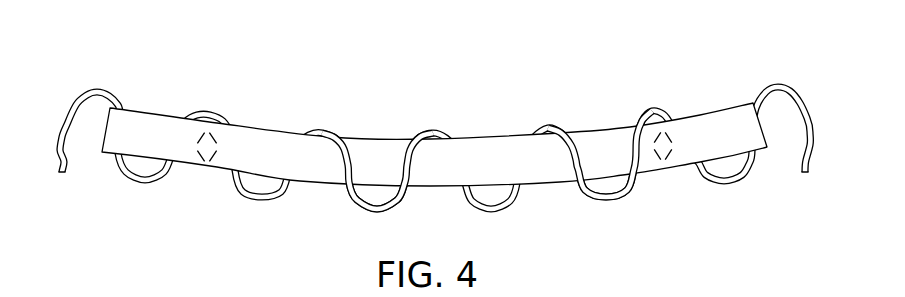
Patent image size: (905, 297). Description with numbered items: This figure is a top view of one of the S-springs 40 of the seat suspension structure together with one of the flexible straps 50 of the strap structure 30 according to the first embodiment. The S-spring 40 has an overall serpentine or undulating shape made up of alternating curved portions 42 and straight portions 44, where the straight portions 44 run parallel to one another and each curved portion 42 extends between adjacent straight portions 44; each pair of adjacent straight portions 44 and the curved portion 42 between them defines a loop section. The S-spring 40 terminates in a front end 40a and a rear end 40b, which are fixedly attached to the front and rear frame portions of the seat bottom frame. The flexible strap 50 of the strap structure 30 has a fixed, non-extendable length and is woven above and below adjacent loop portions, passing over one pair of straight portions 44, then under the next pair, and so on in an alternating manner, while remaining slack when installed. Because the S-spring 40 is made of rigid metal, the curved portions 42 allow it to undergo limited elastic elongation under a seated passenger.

The strap structure 30 is at (551, 192).
The S-spring 40 is at (431, 142).
The front end 40a is at (53, 163).
The rear end 40b is at (812, 160).
The curved portion 42 is at (307, 129).
The straight portion 44 is at (403, 166).
The flexible strap 50 is at (434, 151).